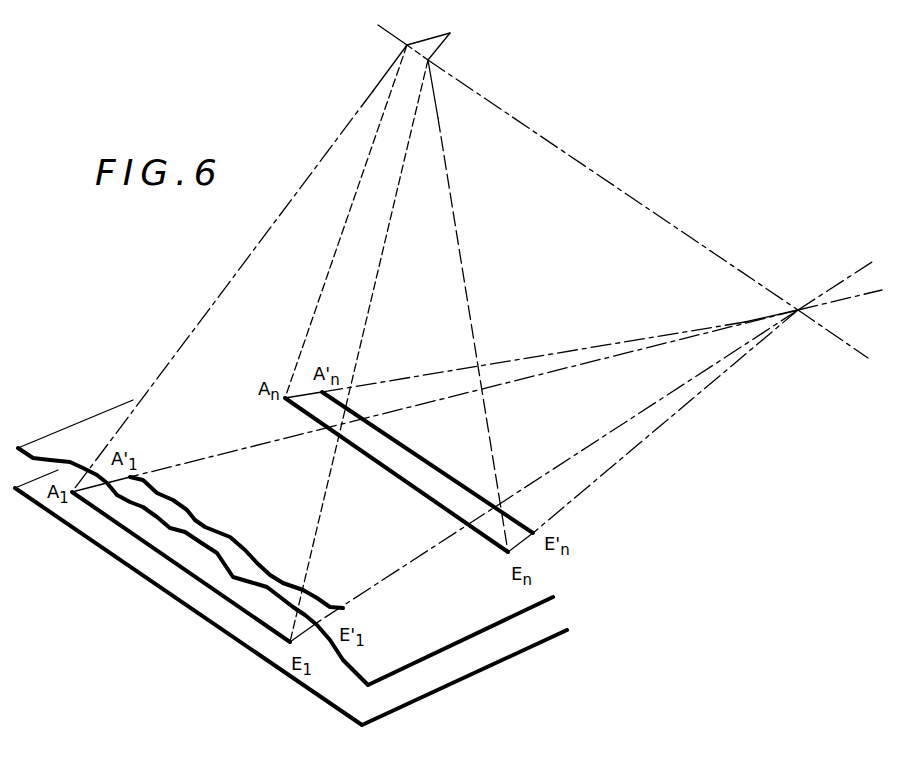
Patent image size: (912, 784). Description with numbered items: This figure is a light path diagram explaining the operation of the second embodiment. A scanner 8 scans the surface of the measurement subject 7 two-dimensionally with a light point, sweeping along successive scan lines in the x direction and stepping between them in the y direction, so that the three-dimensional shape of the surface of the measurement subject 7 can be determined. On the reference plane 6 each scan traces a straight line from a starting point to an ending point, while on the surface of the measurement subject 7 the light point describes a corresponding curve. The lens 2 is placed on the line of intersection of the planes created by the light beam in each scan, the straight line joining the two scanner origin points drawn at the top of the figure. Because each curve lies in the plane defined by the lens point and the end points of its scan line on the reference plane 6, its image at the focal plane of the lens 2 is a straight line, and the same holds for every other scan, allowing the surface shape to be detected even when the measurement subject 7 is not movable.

The scanner 8 is at (467, 26).
The lens 2 is at (798, 308).
The measurement subject 7 is at (472, 637).
The reference plane 6 is at (407, 707).